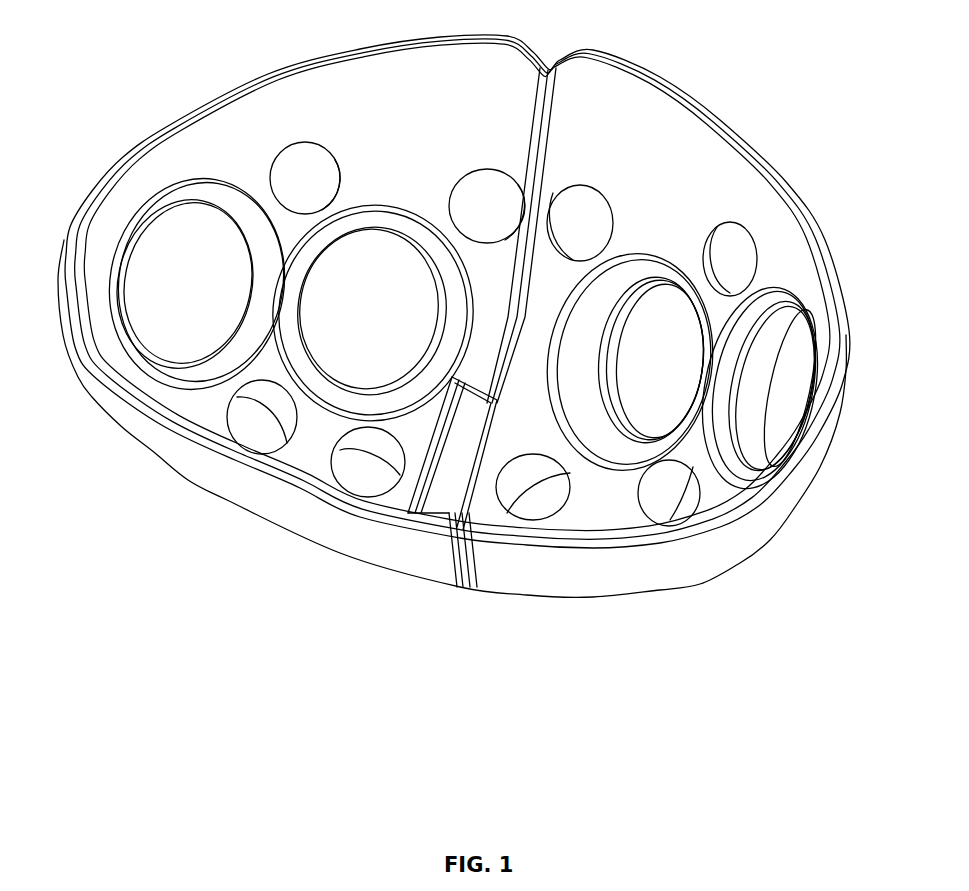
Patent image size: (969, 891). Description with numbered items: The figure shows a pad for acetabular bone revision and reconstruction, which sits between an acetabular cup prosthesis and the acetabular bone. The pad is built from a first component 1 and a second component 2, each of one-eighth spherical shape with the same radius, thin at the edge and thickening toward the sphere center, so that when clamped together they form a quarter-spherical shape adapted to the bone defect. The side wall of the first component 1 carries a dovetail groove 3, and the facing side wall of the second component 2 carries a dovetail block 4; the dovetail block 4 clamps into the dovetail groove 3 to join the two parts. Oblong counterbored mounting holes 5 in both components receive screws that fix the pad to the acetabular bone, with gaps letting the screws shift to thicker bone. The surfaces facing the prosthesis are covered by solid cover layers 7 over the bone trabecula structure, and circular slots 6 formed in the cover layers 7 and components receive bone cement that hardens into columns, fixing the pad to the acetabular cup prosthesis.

The first component 1 is at (310, 513).
The second component 2 is at (620, 580).
The dovetail groove 3 is at (400, 513).
The dovetail block 4 is at (447, 497).
The mounting hole 5 is at (790, 400).
The circular slot 6 is at (253, 433).
The cover layer 7 is at (713, 137).